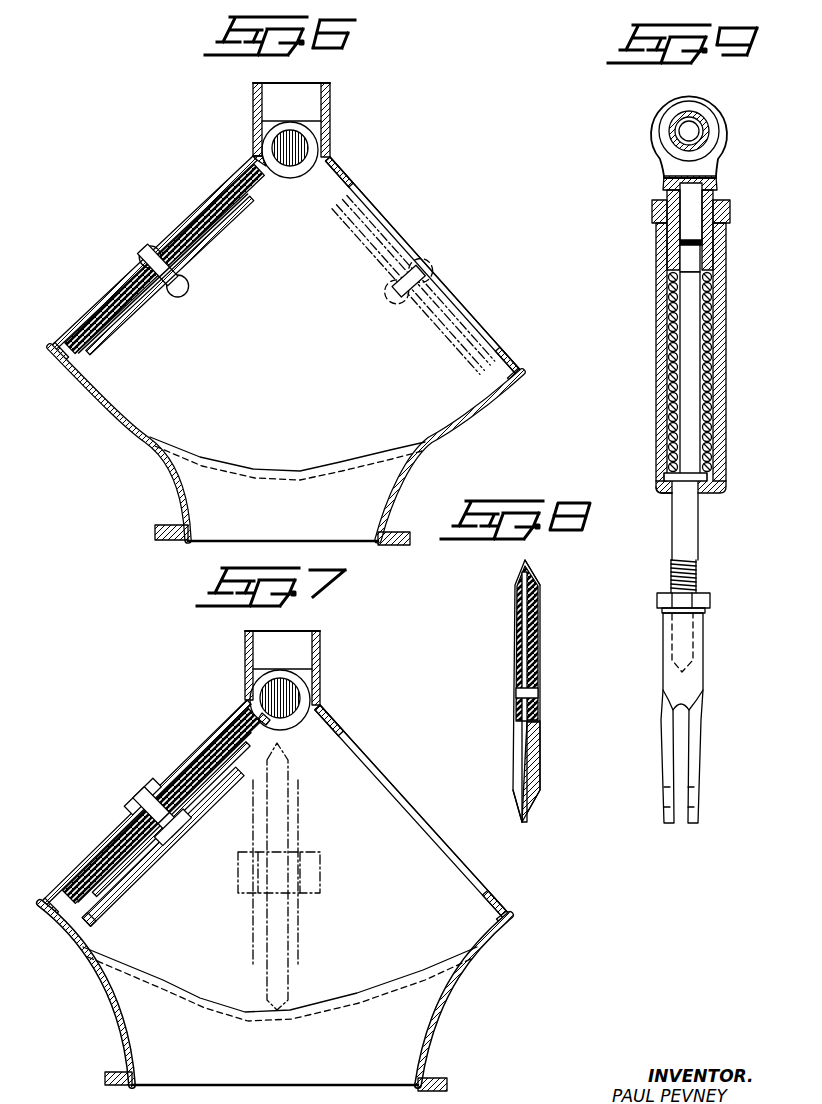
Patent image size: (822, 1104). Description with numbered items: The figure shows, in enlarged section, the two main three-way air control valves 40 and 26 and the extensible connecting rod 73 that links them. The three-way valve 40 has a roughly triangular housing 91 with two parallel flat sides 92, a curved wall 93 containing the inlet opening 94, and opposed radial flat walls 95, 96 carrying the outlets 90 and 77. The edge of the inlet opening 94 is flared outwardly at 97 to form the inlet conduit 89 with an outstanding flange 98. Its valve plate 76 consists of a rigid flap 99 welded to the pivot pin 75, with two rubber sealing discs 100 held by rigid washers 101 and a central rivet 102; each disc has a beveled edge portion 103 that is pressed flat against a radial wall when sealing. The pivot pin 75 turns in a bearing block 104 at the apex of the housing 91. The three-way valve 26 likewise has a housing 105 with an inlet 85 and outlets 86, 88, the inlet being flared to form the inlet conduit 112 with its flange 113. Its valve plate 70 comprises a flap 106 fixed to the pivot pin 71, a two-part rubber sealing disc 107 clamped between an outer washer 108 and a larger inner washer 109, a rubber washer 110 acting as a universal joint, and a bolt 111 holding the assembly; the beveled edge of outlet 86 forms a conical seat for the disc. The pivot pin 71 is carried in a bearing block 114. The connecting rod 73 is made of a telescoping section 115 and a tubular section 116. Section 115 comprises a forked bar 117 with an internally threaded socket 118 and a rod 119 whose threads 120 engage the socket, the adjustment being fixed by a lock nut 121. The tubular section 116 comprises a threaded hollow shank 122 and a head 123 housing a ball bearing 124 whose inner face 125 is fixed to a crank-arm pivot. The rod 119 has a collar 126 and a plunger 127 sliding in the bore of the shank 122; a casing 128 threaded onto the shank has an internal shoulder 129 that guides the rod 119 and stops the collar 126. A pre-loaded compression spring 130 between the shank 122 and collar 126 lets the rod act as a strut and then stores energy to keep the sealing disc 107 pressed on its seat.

In FIG. 7, the three-way valve 26 is at (345, 728).
In FIG. 6, the three-way valve 40 is at (404, 231).
In FIG. 7, the valve plate 70 is at (112, 891).
In FIG. 7, the hinge or pivot pin 71 is at (262, 693).
In FIG. 9, the connecting rod 73 is at (654, 408).
In FIG. 6, the hinge or pivot pin 75 is at (308, 147).
In FIG. 6, the valve plate 76 is at (380, 269).
In FIG. 6, the outlet 77 is at (350, 194).
In FIG. 7, the inlet 85 is at (275, 1069).
In FIG. 7, the outlet opening 86 is at (230, 735).
In FIG. 7, the outlet 88 is at (410, 803).
In FIG. 6, the inlet conduit 89 is at (283, 525).
In FIG. 6, the outlet 90 is at (238, 174).
In FIG. 6, the housing 91 is at (507, 387).
In FIG. 6, the flat sides 92 is at (298, 357).
In FIG. 6, the curved wall 93 is at (106, 411).
In FIG. 6, the inlet opening 94 is at (288, 461).
In FIG. 6, the radial flat wall 95 is at (54, 348).
In FIG. 6, the radial flat wall 96 is at (522, 367).
In FIG. 6, the flared edge 97 is at (419, 463).
In FIG. 6, the outstanding flange 98 is at (155, 530).
In FIG. 6, the rigid flap 99 is at (264, 183).
In FIG. 6, the rubber sealing discs 100 is at (196, 214).
In FIG. 6, the rigid washers 101 is at (124, 290).
In FIG. 6, the central rivet 102 is at (182, 292).
In FIG. 6, the beveled edge portion 103 is at (92, 366).
In FIG. 7, the beveled edge portion 103 is at (52, 893).
In FIG. 8, the beveled edge portion 103 is at (530, 568).
In FIG. 6, the bearing block 104 is at (262, 133).
In FIG. 7, the housing 105 is at (508, 926).
In FIG. 7, the flap 106 is at (92, 915).
In FIG. 7, the rubber sealing disc 107 is at (74, 876).
In FIG. 8, the rubber sealing disc 107 is at (534, 750).
In FIG. 7, the outer washer 108 is at (186, 756).
In FIG. 7, the inner washer 109 is at (210, 784).
In FIG. 7, the rubber washer 110 is at (192, 808).
In FIG. 7, the bolt 111 is at (180, 846).
In FIG. 7, the inlet conduit 112 is at (124, 1030).
In FIG. 7, the outstanding flange 113 is at (105, 1079).
In FIG. 7, the bearing block 114 is at (272, 672).
In FIG. 9, the telescoping section 115 is at (700, 547).
In FIG. 9, the tubular section 116 is at (717, 178).
In FIG. 9, the forked bar 117 is at (669, 670).
In FIG. 9, the internally threaded socket 118 is at (695, 640).
In FIG. 9, the rod 119 is at (676, 531).
In FIG. 9, the threads 120 is at (671, 573).
In FIG. 9, the lock nut 121 is at (712, 603).
In FIG. 9, the threaded hollow shank 122 is at (666, 194).
In FIG. 9, the head 123 is at (653, 134).
In FIG. 9, the ball bearing 124 is at (668, 148).
In FIG. 9, the inner face 125 is at (705, 135).
In FIG. 9, the collar 126 is at (708, 479).
In FIG. 9, the plunger 127 is at (694, 257).
In FIG. 9, the casing 128 is at (656, 326).
In FIG. 9, the internal shoulder 129 is at (662, 491).
In FIG. 9, the compression spring 130 is at (712, 367).